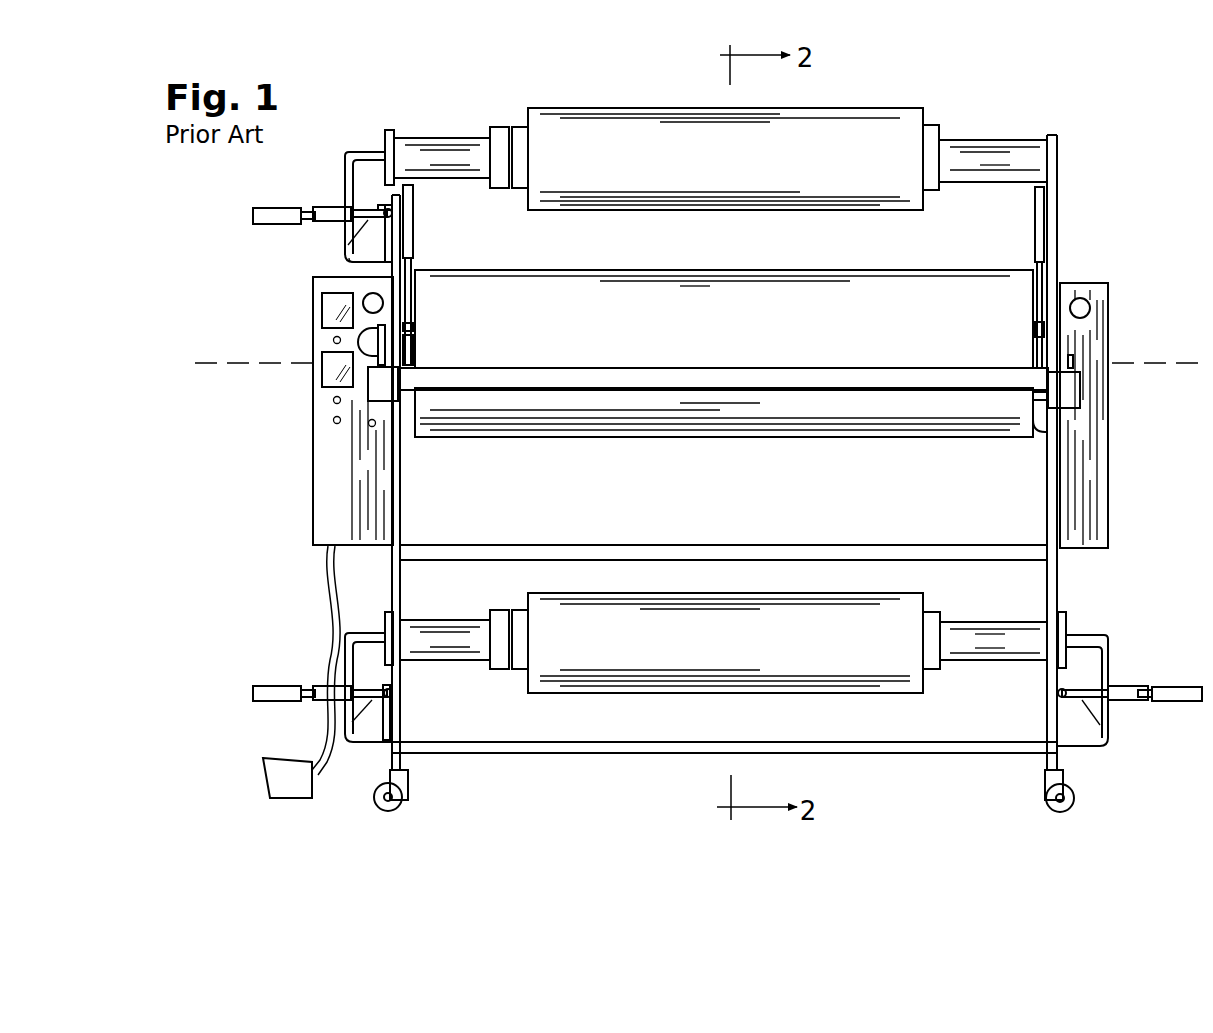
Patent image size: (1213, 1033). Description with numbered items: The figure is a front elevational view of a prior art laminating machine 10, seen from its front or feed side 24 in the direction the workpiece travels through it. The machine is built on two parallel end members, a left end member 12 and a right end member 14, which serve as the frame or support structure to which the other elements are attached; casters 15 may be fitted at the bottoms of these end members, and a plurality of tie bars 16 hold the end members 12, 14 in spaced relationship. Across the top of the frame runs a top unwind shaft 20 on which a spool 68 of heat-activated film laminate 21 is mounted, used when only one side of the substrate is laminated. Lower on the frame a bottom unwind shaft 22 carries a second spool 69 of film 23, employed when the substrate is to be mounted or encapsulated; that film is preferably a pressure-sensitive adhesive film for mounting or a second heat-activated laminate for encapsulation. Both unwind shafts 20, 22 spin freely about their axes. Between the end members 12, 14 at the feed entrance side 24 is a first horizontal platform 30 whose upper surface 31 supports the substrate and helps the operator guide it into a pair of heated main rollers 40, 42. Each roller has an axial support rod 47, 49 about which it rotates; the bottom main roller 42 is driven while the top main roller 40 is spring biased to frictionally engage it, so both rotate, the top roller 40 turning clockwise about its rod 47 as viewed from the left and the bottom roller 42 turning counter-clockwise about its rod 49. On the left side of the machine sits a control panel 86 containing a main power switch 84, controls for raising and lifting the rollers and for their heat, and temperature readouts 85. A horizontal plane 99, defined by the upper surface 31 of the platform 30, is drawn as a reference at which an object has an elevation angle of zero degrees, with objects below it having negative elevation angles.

The laminating machine 10 is at (403, 93).
The left end member 12 is at (392, 757).
The right end member 14 is at (1060, 758).
The casters 15 is at (400, 808).
The tie bars 16 is at (960, 562).
The top unwind shaft 20 is at (653, 212).
The heat-activated film laminate 21 is at (700, 108).
The bottom unwind shaft 22 is at (727, 706).
The film 23 is at (598, 693).
The feed side 24 is at (557, 63).
The first horizontal platform 30 is at (1018, 392).
The upper surface 31 is at (1013, 367).
The top main roller 40 is at (732, 270).
The bottom main roller 42 is at (805, 438).
The axial support rod 47 is at (1040, 313).
The axial support rod 49 is at (1035, 420).
The spool 68 is at (934, 125).
The second spool 69 is at (936, 670).
The main power switch 84 is at (366, 298).
The temperature readouts 85 is at (322, 315).
The control panel 86 is at (312, 478).
The horizontal plane 99 is at (240, 362).